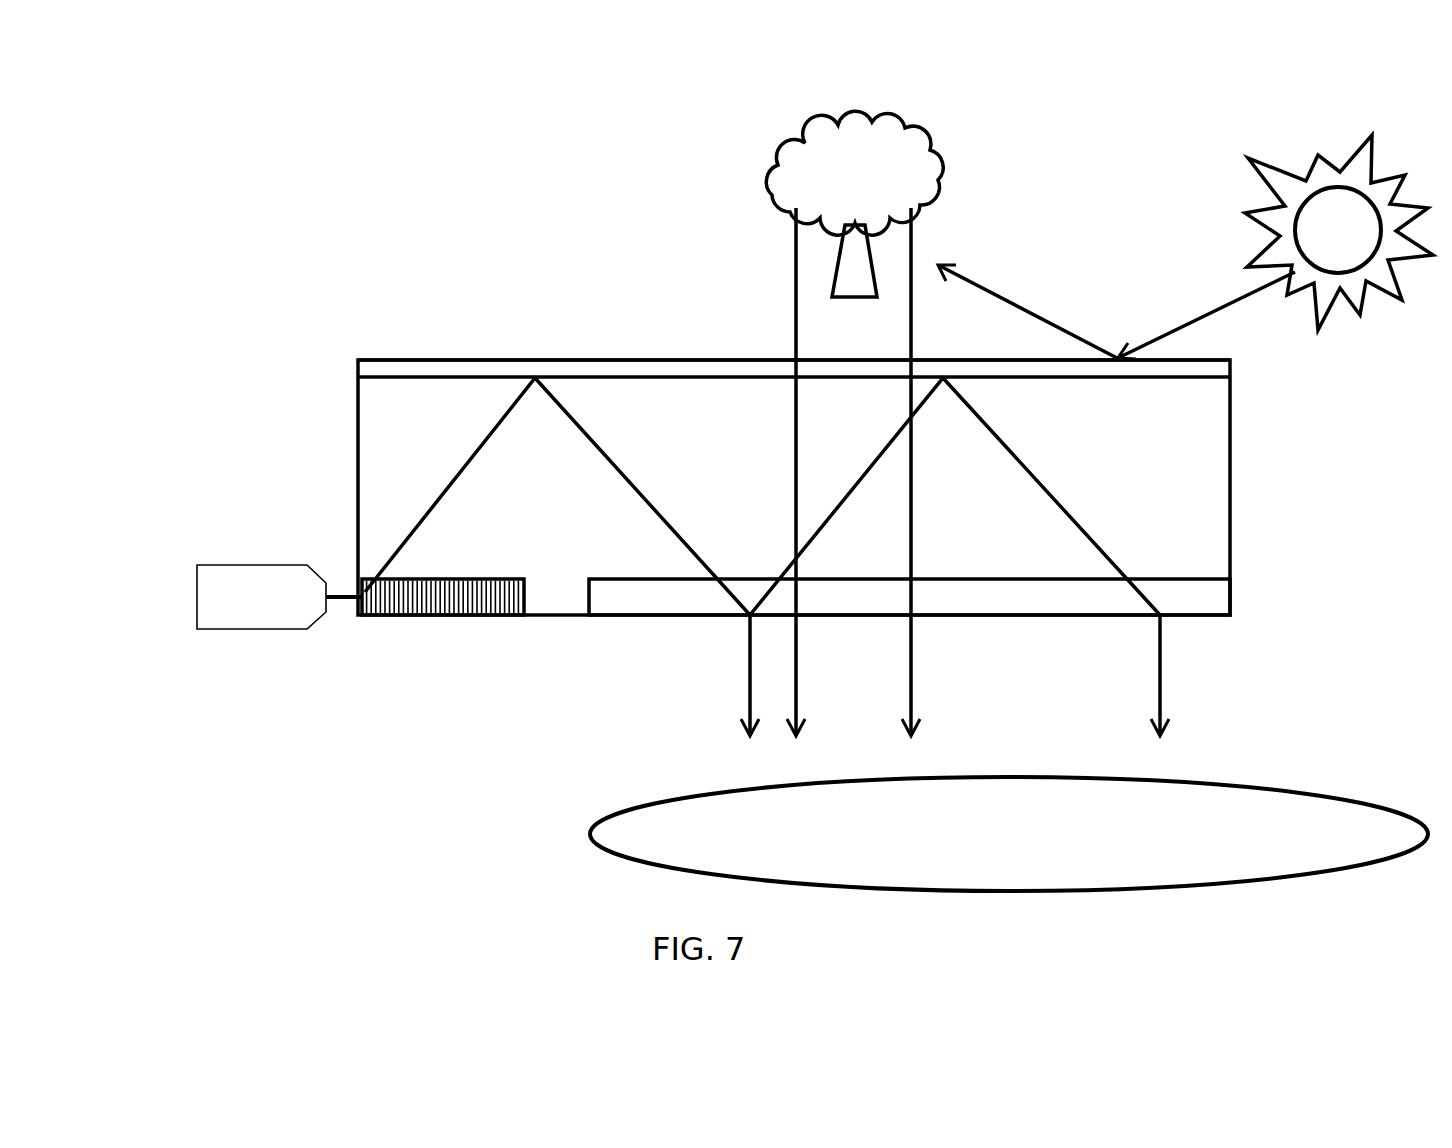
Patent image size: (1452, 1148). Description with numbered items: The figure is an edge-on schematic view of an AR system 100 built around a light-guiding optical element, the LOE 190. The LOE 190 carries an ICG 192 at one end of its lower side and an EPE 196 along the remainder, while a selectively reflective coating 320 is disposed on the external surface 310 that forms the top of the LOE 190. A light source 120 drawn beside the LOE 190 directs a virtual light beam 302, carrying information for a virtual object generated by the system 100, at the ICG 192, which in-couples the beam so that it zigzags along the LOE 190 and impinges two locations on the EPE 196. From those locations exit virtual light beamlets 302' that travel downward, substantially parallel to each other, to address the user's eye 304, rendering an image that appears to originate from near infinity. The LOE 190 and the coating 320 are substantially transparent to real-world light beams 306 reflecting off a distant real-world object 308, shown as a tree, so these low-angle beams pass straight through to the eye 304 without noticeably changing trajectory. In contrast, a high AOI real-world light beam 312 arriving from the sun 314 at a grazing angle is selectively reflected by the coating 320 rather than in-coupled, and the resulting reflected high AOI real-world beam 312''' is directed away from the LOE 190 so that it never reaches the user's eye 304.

The AR system 100 is at (388, 257).
The light source 120 is at (242, 597).
The LOE 190 is at (378, 390).
The ICG 192 is at (402, 595).
The EPE 196 is at (1203, 603).
The virtual light beam 302 is at (740, 552).
The virtual light beamlets 302' is at (957, 675).
The user's eye 304 is at (1245, 812).
The real-world light beams 306 is at (793, 263).
The real-world objects 308 is at (812, 160).
The external surface 310 is at (597, 375).
The high AOI real-world light beam 312 is at (1183, 275).
The reflected high AOI real-world beam 312''' is at (1027, 290).
The sun 314 is at (1318, 208).
The selectively reflective coating 320 is at (717, 368).